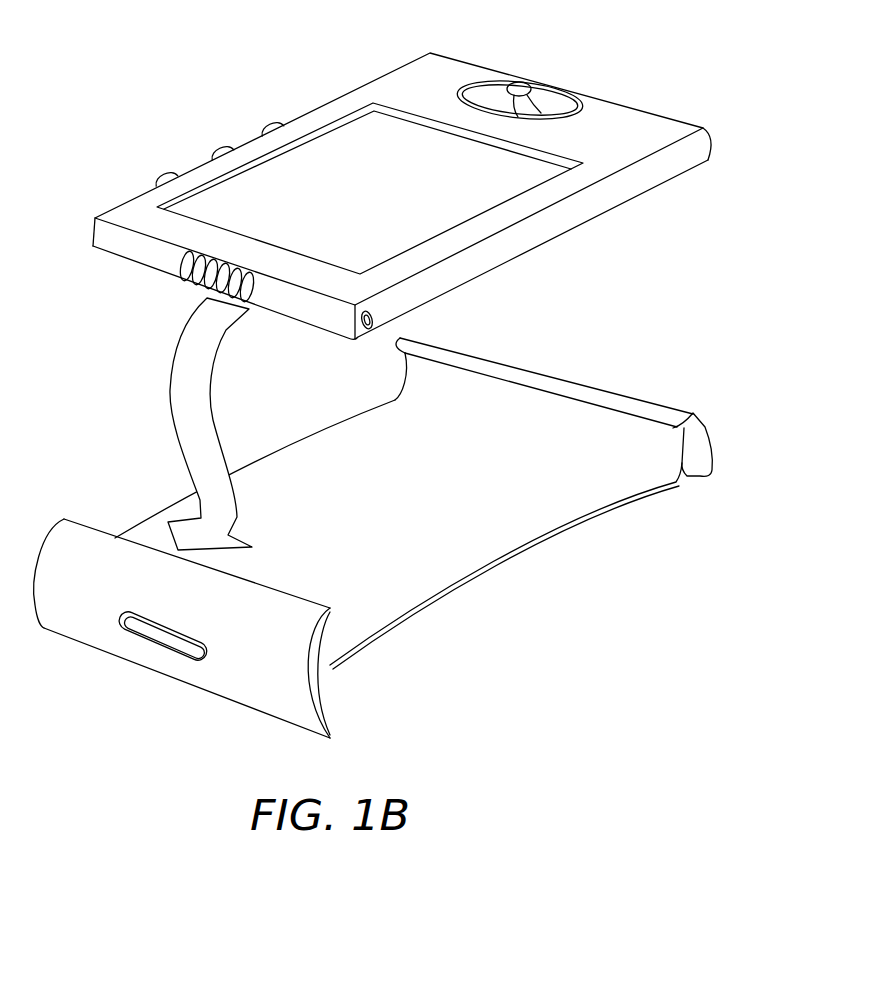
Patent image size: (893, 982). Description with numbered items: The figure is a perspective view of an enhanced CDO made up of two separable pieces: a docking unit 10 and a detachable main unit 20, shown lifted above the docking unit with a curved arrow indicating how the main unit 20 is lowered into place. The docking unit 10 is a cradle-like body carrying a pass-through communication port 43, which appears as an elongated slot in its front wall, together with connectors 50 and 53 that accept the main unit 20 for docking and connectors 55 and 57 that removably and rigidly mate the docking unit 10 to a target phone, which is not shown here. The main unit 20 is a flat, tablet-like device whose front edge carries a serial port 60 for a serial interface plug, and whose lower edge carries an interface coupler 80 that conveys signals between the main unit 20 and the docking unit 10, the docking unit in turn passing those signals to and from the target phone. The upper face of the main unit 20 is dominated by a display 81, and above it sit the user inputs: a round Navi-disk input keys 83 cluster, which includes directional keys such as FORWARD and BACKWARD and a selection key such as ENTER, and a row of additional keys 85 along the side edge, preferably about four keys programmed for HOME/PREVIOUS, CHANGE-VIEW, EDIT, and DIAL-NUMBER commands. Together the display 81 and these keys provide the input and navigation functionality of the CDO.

The docking unit 10 is at (417, 515).
The main unit 20 is at (408, 177).
The pass-through communication port 43 is at (160, 637).
The connector 50 is at (280, 592).
The connector 53 is at (543, 392).
The connector 55 is at (333, 737).
The connector 57 is at (712, 474).
The serial port 60 is at (375, 323).
The interface coupler 80 is at (183, 270).
The display 81 is at (467, 205).
The Navi-disk input keys 83 is at (458, 93).
The additional keys 85 is at (274, 95).